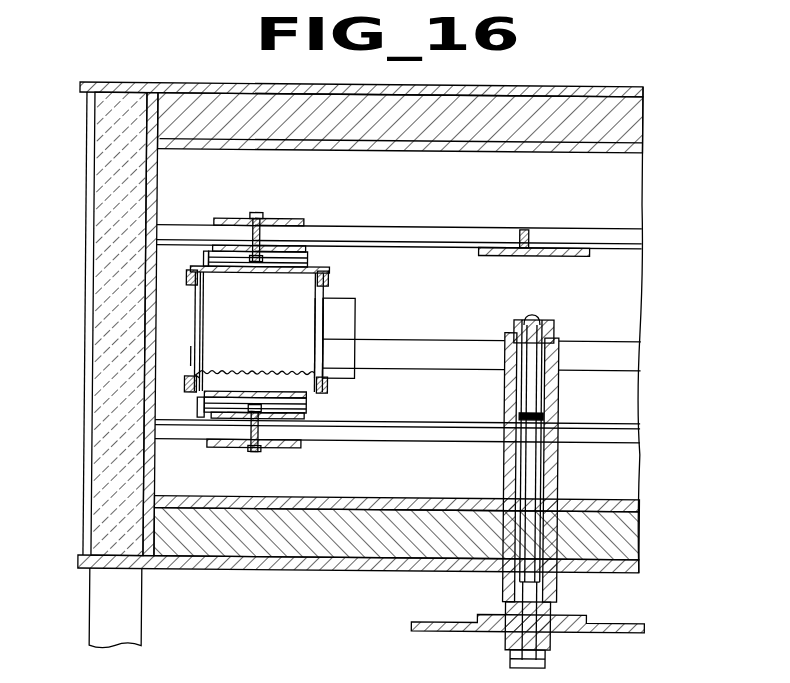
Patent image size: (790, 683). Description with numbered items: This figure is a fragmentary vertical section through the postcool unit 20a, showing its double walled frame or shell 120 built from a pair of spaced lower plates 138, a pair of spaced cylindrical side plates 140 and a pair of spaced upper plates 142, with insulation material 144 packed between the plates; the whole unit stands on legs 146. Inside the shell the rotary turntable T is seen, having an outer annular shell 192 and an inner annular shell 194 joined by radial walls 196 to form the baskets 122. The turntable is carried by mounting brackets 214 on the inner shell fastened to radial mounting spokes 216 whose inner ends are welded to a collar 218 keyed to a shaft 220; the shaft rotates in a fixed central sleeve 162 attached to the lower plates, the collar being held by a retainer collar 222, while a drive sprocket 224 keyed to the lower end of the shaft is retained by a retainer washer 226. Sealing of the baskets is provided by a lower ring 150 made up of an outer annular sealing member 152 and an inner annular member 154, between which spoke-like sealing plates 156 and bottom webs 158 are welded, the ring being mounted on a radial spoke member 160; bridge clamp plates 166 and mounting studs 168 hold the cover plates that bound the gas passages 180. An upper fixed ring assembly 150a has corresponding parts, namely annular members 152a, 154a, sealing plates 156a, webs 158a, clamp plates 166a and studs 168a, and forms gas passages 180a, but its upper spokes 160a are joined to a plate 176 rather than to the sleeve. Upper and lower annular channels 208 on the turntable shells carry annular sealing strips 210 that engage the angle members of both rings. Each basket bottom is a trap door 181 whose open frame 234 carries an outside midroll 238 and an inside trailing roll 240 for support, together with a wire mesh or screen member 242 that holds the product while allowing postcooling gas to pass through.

The postcool unit 20a is at (615, 92).
The double walled frame or shell 120 is at (203, 82).
The upper plates 142 is at (608, 137).
The cylindrical side plates 140 is at (147, 165).
The insulation material 144 is at (185, 98).
The lower plates 138 is at (282, 502).
The legs 146 is at (125, 625).
The upper fixed ring assembly 150a is at (338, 258).
The upper spokes 160a is at (466, 229).
The plate 176 is at (575, 258).
The upper bridge clamp plates 166a is at (230, 217).
The upper mounting studs 168a is at (253, 211).
The upper bottom webs 158a is at (287, 245).
The upper inner annular member 154a is at (309, 263).
The upper outer annular sealing member 152a is at (207, 257).
The upper sealing plates 156a is at (268, 258).
The upper gas passages 180a is at (278, 262).
The outer annular shell 192 is at (197, 292).
The annular sealing strips 210 is at (305, 278).
The annular channels 208 is at (337, 282).
The open frame 234 is at (200, 363).
The outside midroll 238 is at (207, 415).
The inside trailing roll 240 is at (310, 373).
The wire mesh or screen member 242 is at (234, 372).
The radial walls 196 is at (305, 348).
The trap door 181 is at (193, 357).
The mounting brackets 214 is at (347, 327).
The inner annular shell 194 is at (357, 353).
The radial mounting spokes 216 is at (473, 364).
The rotary turntable T is at (332, 293).
The baskets 122 is at (332, 313).
The lower ring 150 is at (337, 393).
The radial spoke member 160 is at (438, 433).
The inner annular member 154 is at (300, 412).
The bottom webs 158 is at (305, 420).
The sealing plates 156 is at (309, 402).
The outer annular sealing member 152 is at (199, 424).
The bridge clamp plates 166 is at (222, 447).
The mounting studs 168 is at (262, 452).
The gas passages 180 is at (286, 407).
The shaft 220 is at (530, 470).
The central sleeve 162 is at (552, 400).
The collar 218 is at (557, 338).
The retainer collar 222 is at (537, 315).
The drive sprocket 224 is at (451, 623).
The retainer washer 226 is at (512, 663).